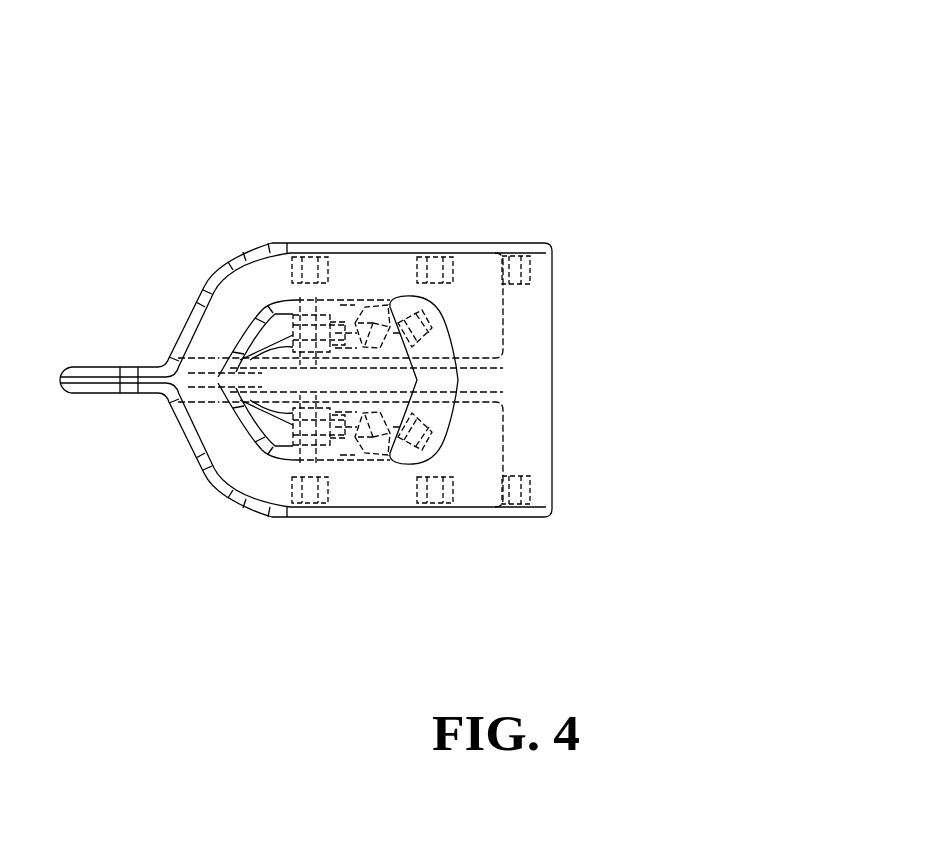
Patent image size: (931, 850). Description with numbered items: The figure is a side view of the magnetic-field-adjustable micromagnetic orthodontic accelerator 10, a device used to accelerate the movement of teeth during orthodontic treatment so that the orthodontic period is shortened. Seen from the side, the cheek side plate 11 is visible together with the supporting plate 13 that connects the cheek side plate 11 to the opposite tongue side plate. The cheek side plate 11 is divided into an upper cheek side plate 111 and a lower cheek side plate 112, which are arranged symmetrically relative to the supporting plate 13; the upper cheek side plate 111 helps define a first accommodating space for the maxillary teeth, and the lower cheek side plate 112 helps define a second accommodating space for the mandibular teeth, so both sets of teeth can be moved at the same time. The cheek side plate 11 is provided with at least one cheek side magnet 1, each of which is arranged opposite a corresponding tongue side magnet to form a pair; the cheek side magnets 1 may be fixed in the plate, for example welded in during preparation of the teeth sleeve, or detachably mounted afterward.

The magnetic-field-adjustable micromagnetic orthodontic accelerator 10 is at (437, 65).
The cheek side magnet 1 is at (319, 272).
The cheek side plate 11 is at (740, 293).
The upper cheek side plate 111 is at (530, 308).
The lower cheek side plate 112 is at (532, 452).
The supporting plate 13 is at (112, 386).